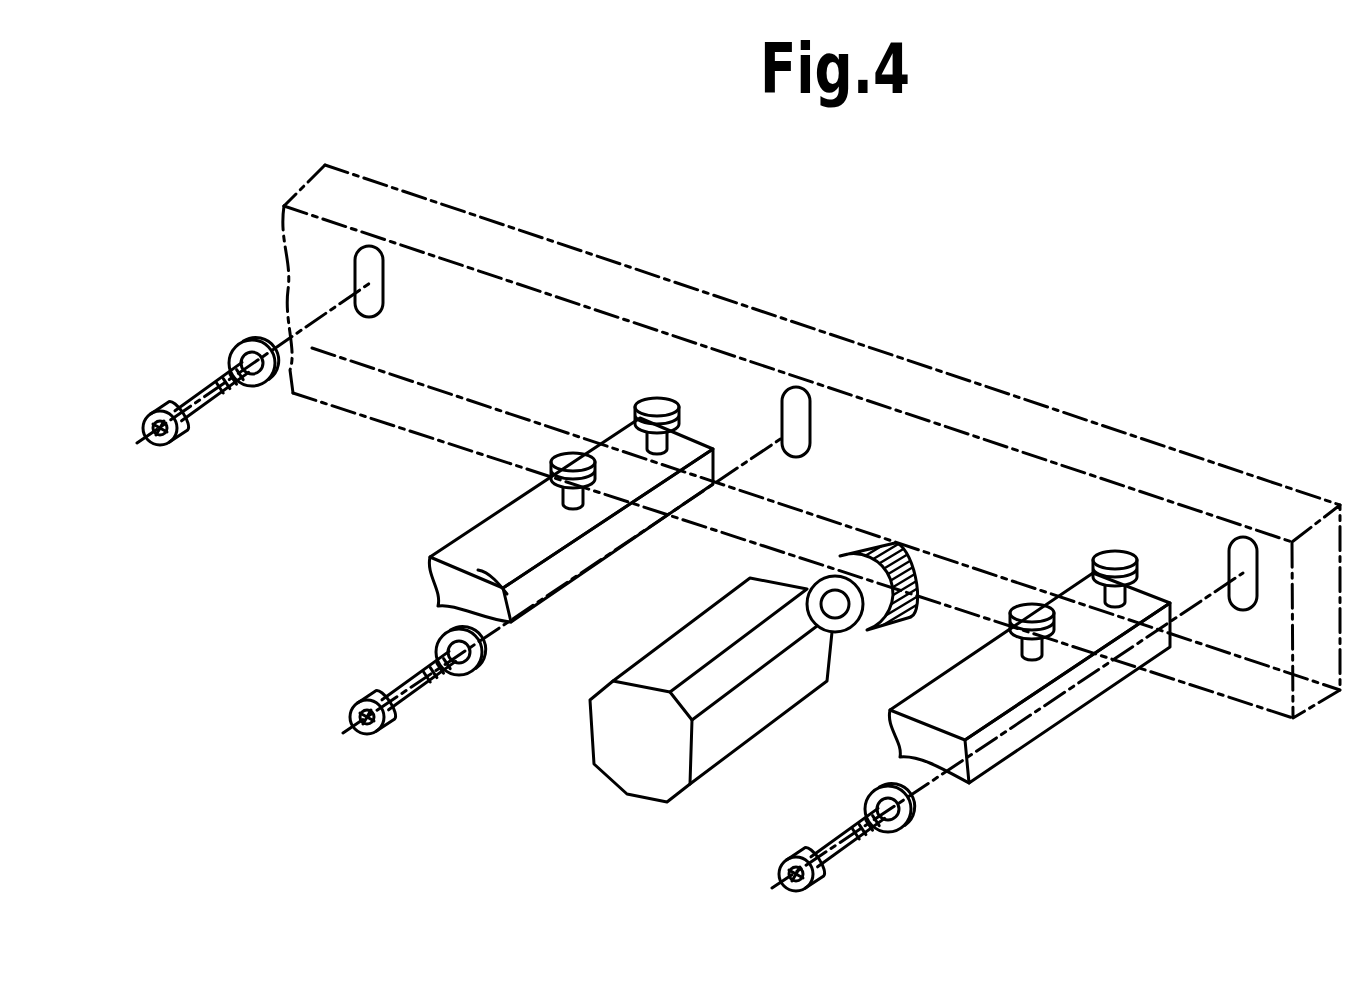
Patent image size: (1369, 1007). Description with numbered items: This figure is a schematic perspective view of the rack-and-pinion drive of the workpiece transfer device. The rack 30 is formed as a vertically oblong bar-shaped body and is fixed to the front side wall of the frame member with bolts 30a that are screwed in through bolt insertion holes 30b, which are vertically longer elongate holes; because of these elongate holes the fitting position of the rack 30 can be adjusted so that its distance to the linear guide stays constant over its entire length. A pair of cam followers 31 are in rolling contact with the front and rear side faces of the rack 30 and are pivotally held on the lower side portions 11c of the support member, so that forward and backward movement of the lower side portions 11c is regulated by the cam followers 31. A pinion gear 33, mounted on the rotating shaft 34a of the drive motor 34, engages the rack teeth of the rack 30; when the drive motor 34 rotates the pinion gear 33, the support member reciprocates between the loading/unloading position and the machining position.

The rack 30 is at (1147, 440).
The bolts 30a is at (157, 403).
The bolt insertion holes 30b is at (373, 257).
The cam followers 31 is at (653, 397).
The pinion gear 33 is at (845, 553).
The drive motor 34 is at (737, 750).
The rotating shaft 34a is at (836, 635).
The lower side portions 11c is at (543, 617).